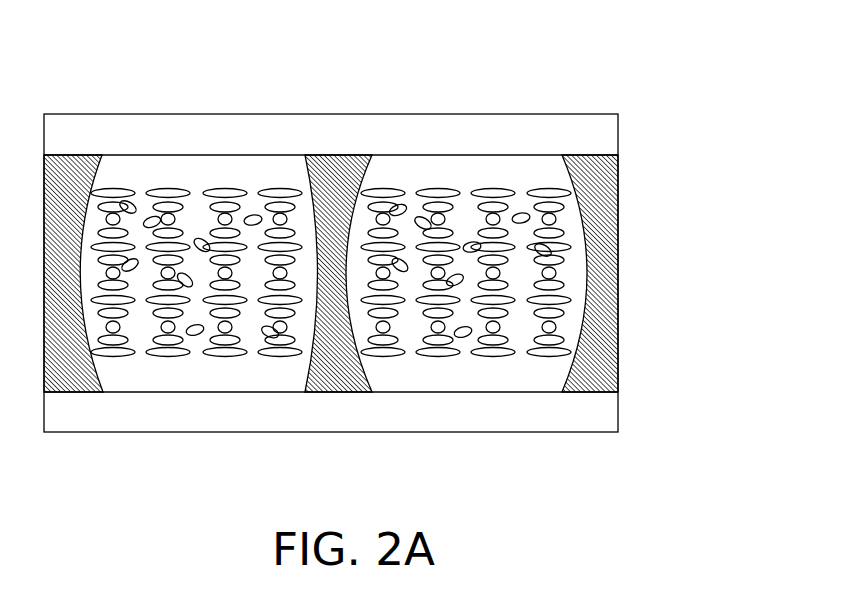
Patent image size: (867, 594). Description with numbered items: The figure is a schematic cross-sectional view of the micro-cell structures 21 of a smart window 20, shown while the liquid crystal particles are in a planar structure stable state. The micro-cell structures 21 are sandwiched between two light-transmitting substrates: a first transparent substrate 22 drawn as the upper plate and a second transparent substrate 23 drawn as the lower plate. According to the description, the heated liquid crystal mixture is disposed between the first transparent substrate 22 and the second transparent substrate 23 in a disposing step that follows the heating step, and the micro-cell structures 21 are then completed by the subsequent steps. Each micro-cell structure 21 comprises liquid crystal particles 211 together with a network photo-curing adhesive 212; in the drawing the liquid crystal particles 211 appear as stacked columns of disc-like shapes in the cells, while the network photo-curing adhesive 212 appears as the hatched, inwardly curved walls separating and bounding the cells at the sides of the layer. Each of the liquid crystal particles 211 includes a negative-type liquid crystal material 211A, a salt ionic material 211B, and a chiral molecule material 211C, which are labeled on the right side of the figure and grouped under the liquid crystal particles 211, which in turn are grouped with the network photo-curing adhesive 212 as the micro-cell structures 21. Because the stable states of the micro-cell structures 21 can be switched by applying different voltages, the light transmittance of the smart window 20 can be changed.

The smart window 20 is at (148, 93).
The micro-cell structures 21 is at (152, 374).
The first transparent substrate 22 is at (578, 122).
The second transparent substrate 23 is at (580, 412).
The liquid crystal particles 211 is at (735, 177).
The negative-type liquid crystal material 211A is at (568, 206).
The salt ionic material 211B is at (548, 214).
The chiral molecule material 211C is at (572, 238).
The network photo-curing adhesive 212 is at (612, 322).